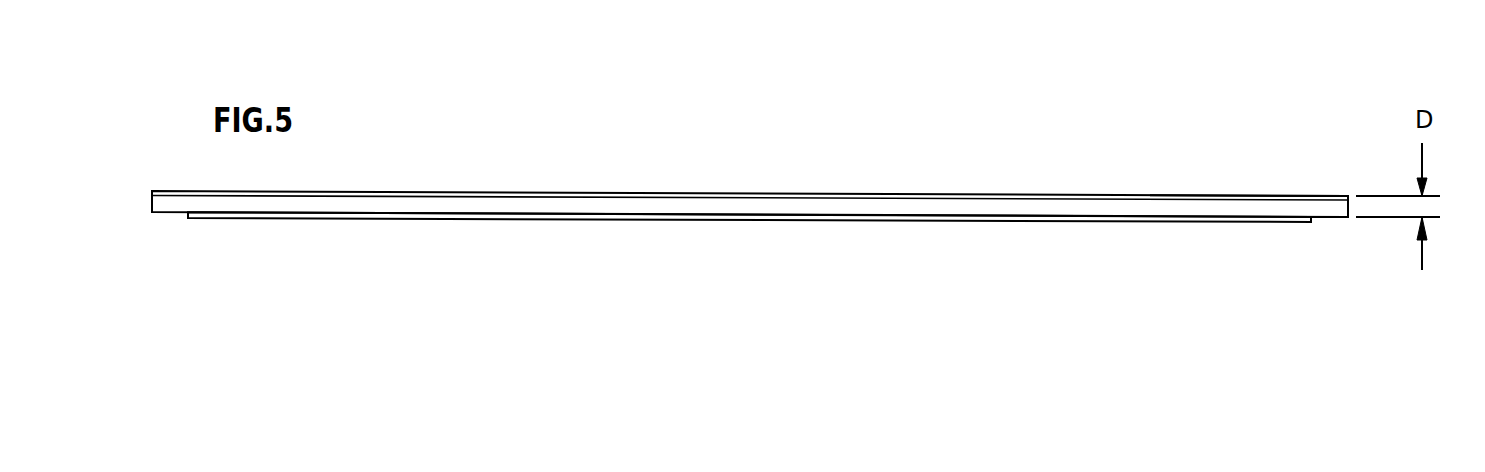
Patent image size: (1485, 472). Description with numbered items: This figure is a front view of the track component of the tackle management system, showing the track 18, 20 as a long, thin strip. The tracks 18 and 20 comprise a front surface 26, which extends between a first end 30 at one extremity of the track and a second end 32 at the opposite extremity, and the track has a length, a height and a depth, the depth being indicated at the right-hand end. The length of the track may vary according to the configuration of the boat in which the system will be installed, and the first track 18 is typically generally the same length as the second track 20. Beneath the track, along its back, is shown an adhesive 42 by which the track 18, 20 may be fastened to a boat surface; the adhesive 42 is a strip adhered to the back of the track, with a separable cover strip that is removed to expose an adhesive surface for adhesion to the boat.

The first track 18 is at (761, 175).
The second track 20 is at (1004, 154).
The first end 30 is at (182, 191).
The second end 32 is at (1305, 195).
The front surface 26 is at (1220, 195).
The adhesive 42 is at (787, 219).